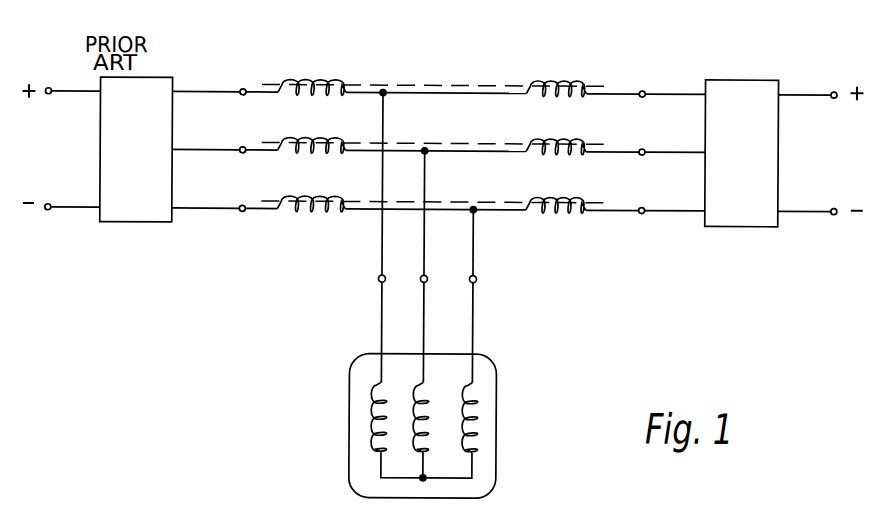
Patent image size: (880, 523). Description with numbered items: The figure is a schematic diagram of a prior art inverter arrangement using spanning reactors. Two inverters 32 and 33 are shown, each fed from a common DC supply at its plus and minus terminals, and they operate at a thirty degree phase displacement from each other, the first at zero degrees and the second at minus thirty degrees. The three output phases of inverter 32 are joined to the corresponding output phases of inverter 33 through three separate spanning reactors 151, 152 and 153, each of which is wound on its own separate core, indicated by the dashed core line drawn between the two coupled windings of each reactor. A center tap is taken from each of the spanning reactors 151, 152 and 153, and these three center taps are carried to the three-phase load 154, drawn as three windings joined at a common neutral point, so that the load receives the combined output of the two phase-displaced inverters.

The inverter 32 is at (164, 81).
The inverter 33 is at (776, 82).
The spanning reactor 151 is at (588, 82).
The spanning reactor 152 is at (588, 140).
The spanning reactor 153 is at (584, 198).
The three-phase load 154 is at (497, 360).